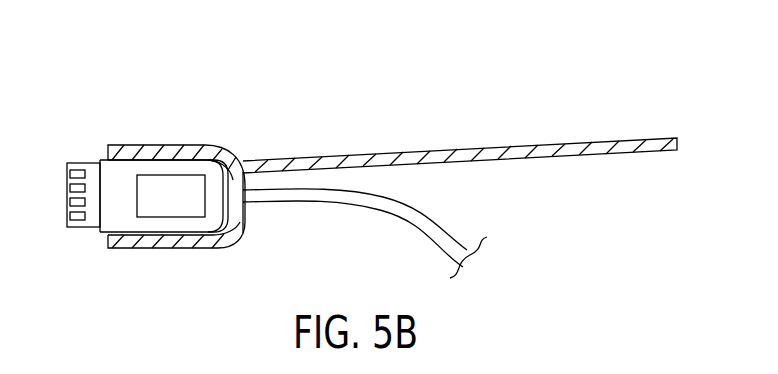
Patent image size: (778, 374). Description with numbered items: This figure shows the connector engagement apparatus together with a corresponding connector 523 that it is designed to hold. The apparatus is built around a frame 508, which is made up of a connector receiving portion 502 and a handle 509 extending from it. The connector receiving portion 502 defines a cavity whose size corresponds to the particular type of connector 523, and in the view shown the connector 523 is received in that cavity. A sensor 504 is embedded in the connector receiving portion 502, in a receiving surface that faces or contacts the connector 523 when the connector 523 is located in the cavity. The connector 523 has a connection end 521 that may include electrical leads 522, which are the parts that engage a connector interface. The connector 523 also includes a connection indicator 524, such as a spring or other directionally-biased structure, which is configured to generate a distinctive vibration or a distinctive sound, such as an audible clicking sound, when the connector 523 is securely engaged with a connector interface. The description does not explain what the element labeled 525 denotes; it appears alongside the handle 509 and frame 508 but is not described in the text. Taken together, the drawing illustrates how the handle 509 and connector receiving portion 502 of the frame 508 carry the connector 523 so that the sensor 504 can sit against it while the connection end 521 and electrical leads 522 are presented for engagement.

The connector receiving portion 502 is at (162, 242).
The sensor 504 is at (236, 165).
The frame 508 is at (344, 142).
The handle 509 is at (483, 150).
The connection end 521 is at (78, 165).
The electrical leads 522 is at (68, 173).
The connector 523 is at (125, 168).
The connection indicator 524 is at (183, 175).
The round cable 525 is at (380, 207).